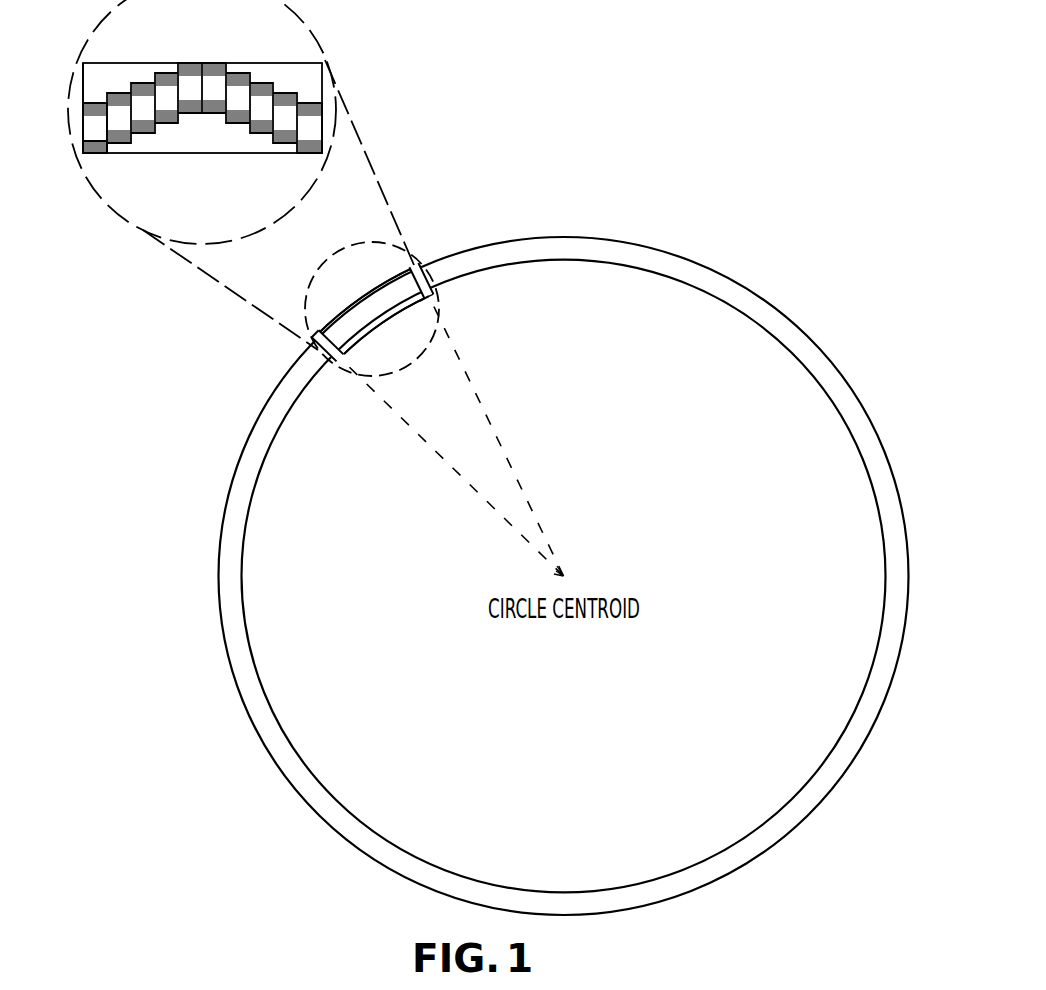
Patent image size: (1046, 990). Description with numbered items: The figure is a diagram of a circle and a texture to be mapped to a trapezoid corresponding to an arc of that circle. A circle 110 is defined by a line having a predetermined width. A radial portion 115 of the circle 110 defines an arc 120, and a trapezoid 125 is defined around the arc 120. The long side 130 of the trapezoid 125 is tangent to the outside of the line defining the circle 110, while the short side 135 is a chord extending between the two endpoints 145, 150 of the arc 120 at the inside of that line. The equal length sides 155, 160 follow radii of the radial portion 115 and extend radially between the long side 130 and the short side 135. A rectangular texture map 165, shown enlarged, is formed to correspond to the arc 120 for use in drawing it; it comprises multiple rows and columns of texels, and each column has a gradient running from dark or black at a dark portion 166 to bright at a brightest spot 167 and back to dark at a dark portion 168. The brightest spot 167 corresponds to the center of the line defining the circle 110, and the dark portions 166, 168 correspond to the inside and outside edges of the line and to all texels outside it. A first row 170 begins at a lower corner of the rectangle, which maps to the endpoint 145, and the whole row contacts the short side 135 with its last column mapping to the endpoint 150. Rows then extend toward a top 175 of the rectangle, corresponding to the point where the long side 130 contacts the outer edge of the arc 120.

The circle 110 is at (775, 305).
The radial portion 115 is at (484, 413).
The arc 120 is at (394, 271).
The trapezoid 125 is at (433, 306).
The long side 130 is at (370, 300).
The short side 135 is at (390, 318).
The endpoint 145 is at (338, 362).
The endpoint 150 is at (433, 293).
The equal length side 155 is at (307, 346).
The equal length side 160 is at (419, 262).
The rectangular texture map 165 is at (258, 63).
The dark portion 166 is at (83, 143).
The brightest spot 167 is at (83, 130).
The dark portion 168 is at (83, 92).
The first row 170 is at (98, 154).
The top 175 is at (192, 63).